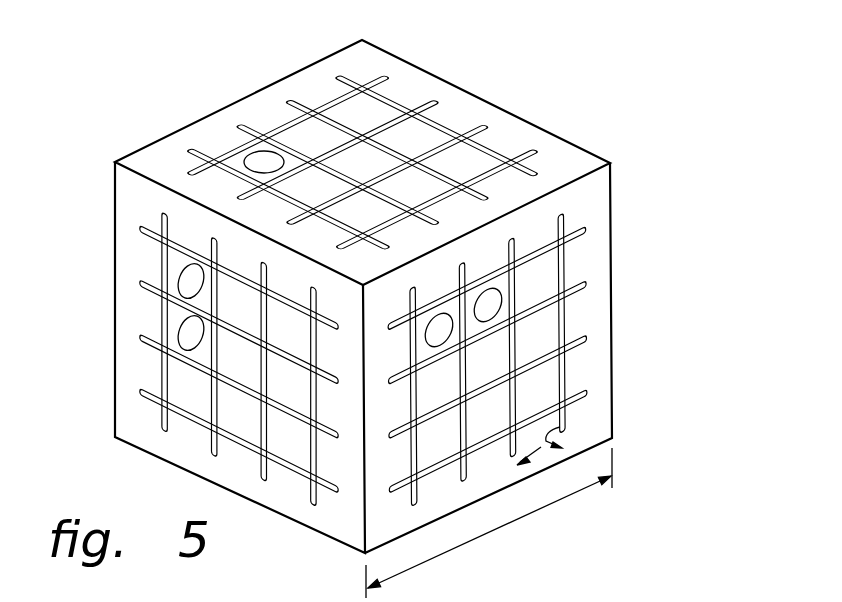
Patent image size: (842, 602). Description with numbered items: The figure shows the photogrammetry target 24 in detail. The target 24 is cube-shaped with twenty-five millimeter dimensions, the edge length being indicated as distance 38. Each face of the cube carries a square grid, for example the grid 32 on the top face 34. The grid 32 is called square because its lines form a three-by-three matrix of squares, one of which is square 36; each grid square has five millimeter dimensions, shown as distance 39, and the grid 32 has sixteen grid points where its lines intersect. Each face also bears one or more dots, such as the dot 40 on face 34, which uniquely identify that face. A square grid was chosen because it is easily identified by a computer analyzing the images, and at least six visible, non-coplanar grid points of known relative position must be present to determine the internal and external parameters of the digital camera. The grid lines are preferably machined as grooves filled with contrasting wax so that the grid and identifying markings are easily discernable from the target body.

The photogrammetry target 24 is at (643, 112).
The grid 32 is at (478, 112).
The top face 34 is at (585, 162).
The square 36 is at (362, 108).
The distance 38 is at (522, 516).
The distance 39 is at (560, 427).
The dot 40 is at (263, 157).